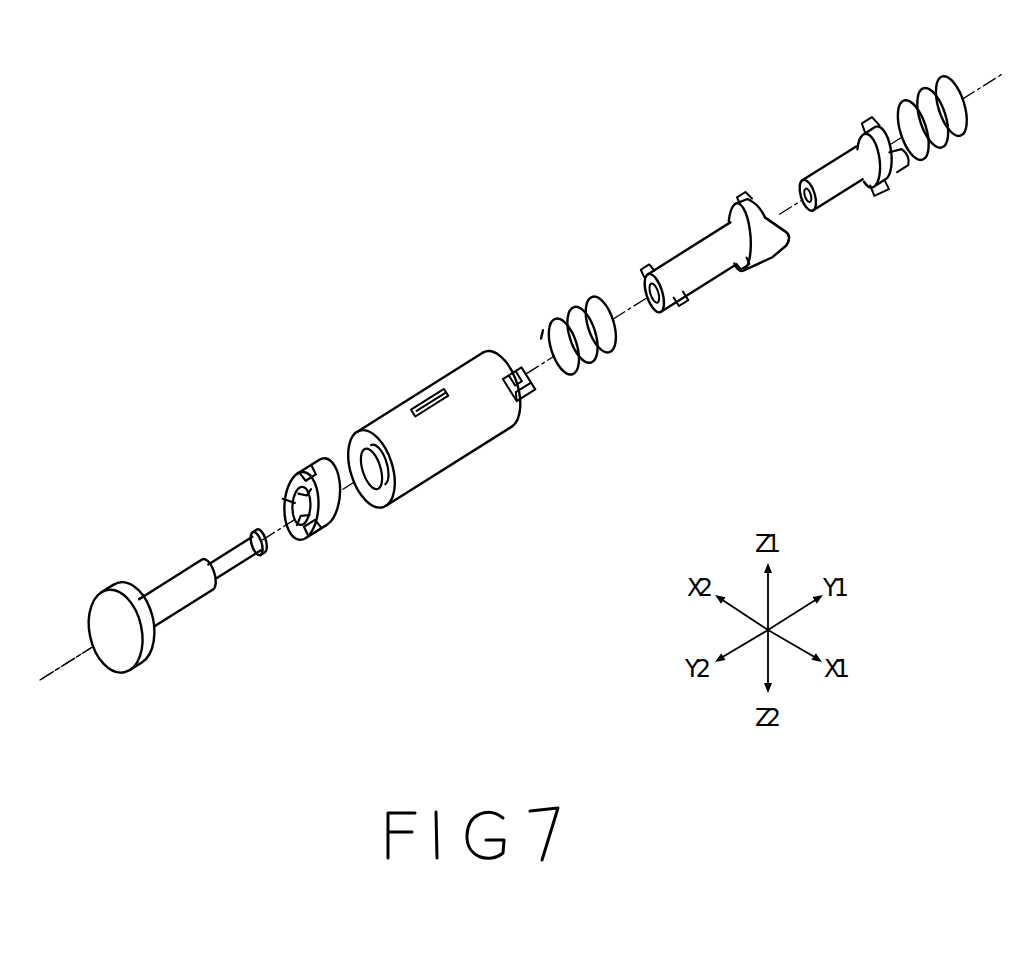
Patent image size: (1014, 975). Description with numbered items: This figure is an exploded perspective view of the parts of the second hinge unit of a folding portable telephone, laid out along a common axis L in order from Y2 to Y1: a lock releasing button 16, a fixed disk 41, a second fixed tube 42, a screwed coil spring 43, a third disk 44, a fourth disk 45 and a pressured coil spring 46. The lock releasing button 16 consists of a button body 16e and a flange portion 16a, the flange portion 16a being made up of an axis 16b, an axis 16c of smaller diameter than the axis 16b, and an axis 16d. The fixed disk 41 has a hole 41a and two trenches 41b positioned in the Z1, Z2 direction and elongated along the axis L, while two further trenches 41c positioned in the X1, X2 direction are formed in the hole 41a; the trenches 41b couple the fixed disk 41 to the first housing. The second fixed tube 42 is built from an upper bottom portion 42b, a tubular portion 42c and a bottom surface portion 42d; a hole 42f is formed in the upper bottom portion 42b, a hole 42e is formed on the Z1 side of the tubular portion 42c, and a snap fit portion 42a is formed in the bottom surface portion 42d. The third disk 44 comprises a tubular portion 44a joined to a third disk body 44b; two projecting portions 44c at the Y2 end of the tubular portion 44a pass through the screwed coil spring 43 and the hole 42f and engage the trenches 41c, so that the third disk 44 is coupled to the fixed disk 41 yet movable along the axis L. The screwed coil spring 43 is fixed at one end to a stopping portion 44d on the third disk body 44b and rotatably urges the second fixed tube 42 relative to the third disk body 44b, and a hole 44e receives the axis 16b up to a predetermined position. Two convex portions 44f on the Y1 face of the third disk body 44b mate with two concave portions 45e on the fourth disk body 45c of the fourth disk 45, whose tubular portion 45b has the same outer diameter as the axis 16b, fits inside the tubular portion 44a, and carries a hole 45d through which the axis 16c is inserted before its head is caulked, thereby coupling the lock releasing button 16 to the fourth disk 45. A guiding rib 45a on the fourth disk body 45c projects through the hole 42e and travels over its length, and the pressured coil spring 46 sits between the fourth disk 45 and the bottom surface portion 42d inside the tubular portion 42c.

The axis L is at (66, 652).
The lock releasing button 16 is at (165, 581).
The flange portion 16a is at (143, 588).
The axis 16b is at (185, 570).
The axis 16c is at (213, 556).
The axis 16d is at (251, 534).
The knob 16e is at (116, 588).
The fixed disk 41 is at (321, 509).
The hole 41a is at (338, 531).
The trenches 41b is at (311, 463).
The trenches 41c is at (293, 473).
The second fixed tube 42 is at (443, 424).
The snap fit portion 42a is at (512, 375).
The upper bottom portion 42b is at (385, 496).
The tubular portion 42c is at (472, 443).
The bottom surface portion 42d is at (518, 413).
The hole 42e is at (433, 391).
The hole 42f is at (358, 438).
The screwed coil spring 43 is at (593, 360).
The third disk 44 is at (722, 272).
The tubular portion 44a is at (697, 247).
The third disk body 44b is at (738, 203).
The projecting portions 44c is at (645, 275).
The stopping portion 44d is at (743, 266).
The hole 44e is at (655, 312).
The convex portions 44f is at (747, 203).
The fourth disk 45 is at (855, 168).
The guiding rib 45a is at (867, 127).
The tubular portion 45b is at (837, 160).
The fourth disk body 45c is at (893, 161).
The hole 45d is at (803, 180).
The concave portions 45e is at (873, 194).
The pressured coil spring 46 is at (953, 142).